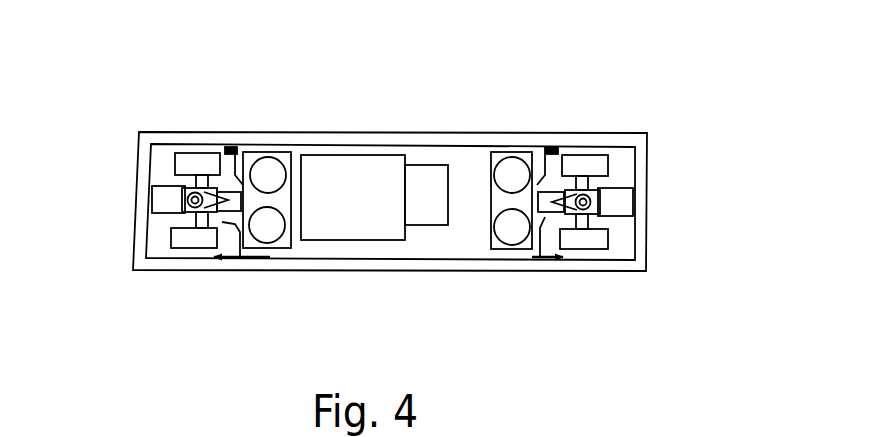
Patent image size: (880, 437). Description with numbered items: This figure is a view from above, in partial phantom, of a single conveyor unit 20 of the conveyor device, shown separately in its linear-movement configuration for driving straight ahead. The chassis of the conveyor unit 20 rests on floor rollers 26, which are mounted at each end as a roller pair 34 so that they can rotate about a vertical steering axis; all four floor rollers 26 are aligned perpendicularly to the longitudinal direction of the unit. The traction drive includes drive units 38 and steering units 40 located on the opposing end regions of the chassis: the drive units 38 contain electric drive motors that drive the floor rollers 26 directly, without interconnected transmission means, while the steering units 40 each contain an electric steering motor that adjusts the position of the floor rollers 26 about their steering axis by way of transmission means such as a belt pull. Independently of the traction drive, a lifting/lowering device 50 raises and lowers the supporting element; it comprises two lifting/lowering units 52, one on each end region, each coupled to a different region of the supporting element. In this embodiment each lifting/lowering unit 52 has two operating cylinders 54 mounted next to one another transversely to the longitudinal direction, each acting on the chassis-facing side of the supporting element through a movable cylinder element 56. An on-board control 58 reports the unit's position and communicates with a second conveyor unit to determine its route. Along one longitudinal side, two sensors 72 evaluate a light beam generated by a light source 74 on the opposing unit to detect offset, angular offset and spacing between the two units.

The conveyor unit 20 is at (697, 88).
The floor rollers 26 is at (190, 166).
The roller pair 34 is at (187, 279).
The drive units 38 is at (130, 200).
The steering units 40 is at (219, 223).
The lifting/lowering device 50 is at (383, 182).
The lifting/lowering units 52 is at (267, 125).
The operating cylinder 54 is at (290, 148).
The movable cylinder element 56 is at (495, 172).
The on-board control 58 is at (420, 213).
The sensors 72 is at (232, 147).
The light source 74 is at (220, 260).